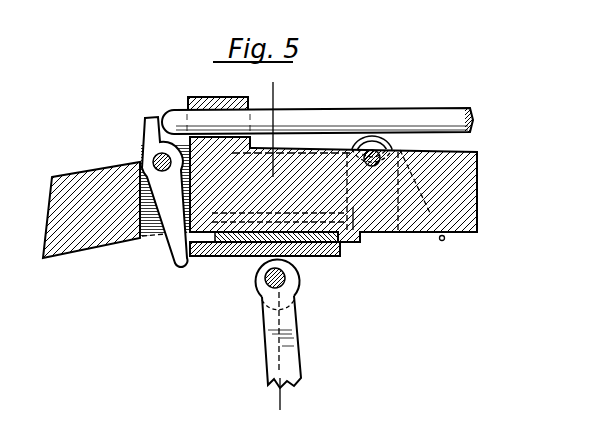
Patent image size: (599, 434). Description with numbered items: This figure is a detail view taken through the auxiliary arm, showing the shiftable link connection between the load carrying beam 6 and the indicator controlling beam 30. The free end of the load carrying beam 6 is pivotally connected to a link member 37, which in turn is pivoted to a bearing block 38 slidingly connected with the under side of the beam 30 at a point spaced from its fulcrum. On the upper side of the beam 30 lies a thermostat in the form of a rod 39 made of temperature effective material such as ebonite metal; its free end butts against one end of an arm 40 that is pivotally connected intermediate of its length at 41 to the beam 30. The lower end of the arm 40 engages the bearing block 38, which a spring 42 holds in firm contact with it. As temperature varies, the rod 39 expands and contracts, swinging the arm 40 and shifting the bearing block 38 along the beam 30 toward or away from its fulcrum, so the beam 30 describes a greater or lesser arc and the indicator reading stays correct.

The beam 30 is at (455, 178).
The link member 37 is at (287, 358).
The bearing block 38 is at (226, 258).
The rod 39 is at (353, 117).
The arm 40 is at (162, 185).
The pivot 41 is at (158, 158).
The spring 42 is at (350, 158).
The load carrying beam 6 is at (278, 246).